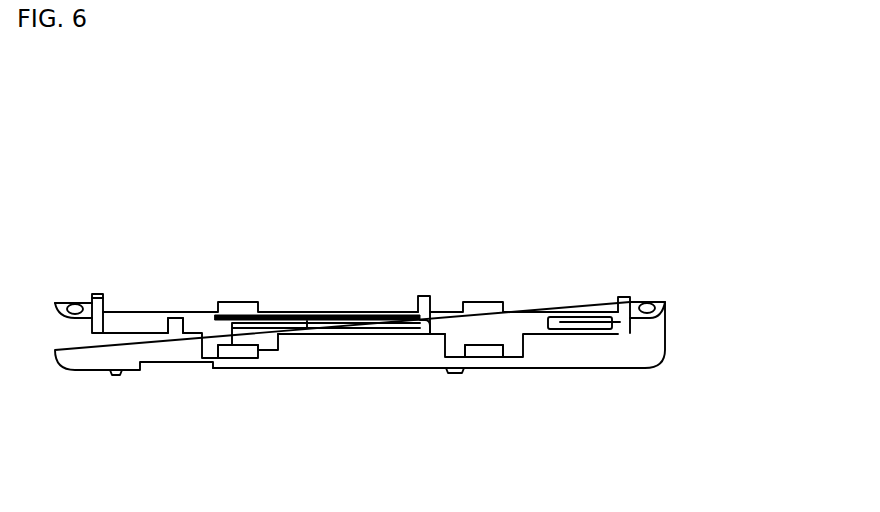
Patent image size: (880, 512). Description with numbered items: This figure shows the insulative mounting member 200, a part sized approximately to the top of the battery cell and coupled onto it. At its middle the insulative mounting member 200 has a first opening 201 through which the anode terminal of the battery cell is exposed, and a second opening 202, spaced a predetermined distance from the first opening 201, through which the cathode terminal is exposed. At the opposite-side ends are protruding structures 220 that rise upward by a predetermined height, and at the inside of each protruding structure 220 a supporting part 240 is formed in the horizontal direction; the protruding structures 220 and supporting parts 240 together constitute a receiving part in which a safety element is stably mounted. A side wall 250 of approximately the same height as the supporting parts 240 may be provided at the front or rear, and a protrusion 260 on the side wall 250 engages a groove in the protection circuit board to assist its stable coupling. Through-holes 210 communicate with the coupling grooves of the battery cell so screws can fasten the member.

The insulative mounting member 200 is at (78, 176).
The through-hole 210 is at (78, 305).
The protruding structure 220 is at (635, 300).
The first opening 201 is at (335, 315).
The second opening 202 is at (587, 320).
The supporting part 240 is at (597, 329).
The side wall 250 is at (348, 343).
The protrusion 260 is at (174, 318).